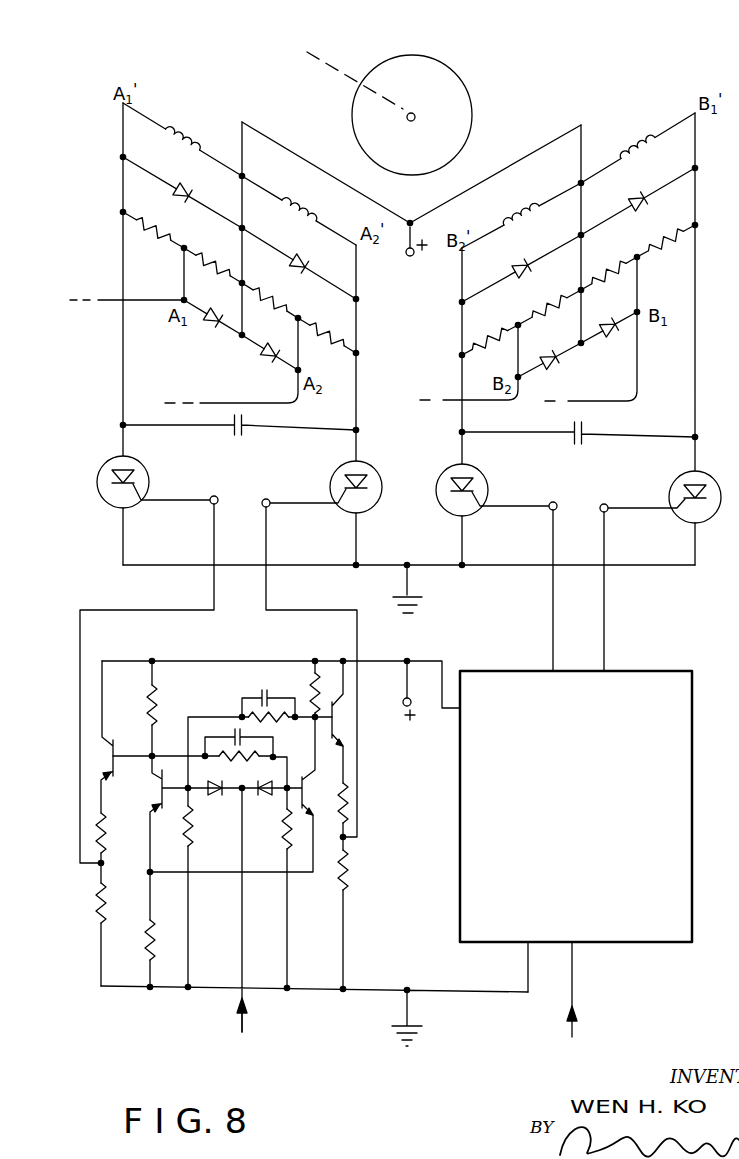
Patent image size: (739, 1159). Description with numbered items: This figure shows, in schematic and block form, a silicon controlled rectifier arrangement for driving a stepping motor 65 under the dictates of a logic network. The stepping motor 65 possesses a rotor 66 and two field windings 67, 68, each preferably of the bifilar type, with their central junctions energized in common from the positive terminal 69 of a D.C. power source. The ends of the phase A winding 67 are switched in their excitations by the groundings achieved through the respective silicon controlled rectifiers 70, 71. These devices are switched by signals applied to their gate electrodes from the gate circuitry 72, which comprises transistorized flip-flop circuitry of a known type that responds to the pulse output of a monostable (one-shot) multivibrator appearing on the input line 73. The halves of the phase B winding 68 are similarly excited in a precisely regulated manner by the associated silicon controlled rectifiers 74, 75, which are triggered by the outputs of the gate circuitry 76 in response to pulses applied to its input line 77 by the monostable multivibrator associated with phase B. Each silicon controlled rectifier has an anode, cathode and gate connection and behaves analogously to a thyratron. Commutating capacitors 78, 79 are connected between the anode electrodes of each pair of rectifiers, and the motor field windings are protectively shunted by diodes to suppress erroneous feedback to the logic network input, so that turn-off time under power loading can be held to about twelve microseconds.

The stepping motor 65 is at (504, 103).
The rotor 66 is at (447, 101).
The phase A field winding 67 is at (192, 134).
The phase B field winding 68 is at (630, 140).
The positive terminal 69 is at (411, 257).
The silicon controlled rectifier 70 is at (143, 469).
The silicon controlled rectifier 71 is at (334, 470).
The gate circuitry 72 is at (56, 727).
The input line 73 is at (247, 1018).
The silicon controlled rectifier 74 is at (478, 472).
The silicon controlled rectifier 75 is at (672, 476).
The gate circuitry 76 is at (693, 732).
The input line 77 is at (568, 1026).
The commutating capacitor 78 is at (244, 436).
The commutating capacitor 79 is at (585, 437).